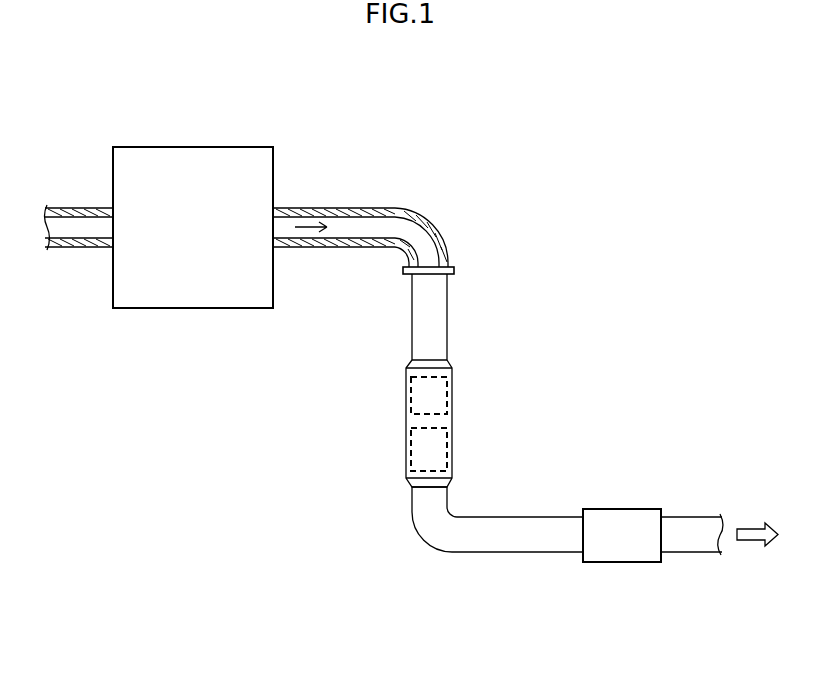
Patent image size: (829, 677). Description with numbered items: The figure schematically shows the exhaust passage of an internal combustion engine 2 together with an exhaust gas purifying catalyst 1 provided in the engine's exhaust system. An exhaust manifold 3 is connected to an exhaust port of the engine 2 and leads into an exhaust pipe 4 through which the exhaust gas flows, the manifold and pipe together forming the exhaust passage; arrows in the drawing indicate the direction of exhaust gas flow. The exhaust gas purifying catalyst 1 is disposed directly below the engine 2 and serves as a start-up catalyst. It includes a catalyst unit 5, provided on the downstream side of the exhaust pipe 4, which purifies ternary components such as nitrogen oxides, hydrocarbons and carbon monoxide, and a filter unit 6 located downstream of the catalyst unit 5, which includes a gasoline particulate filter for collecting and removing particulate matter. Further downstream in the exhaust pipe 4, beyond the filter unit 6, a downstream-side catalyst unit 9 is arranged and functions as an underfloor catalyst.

The exhaust gas purifying catalyst 1 is at (403, 425).
The internal combustion engine 2 is at (254, 140).
The exhaust manifold 3 is at (366, 207).
The exhaust pipe 4 is at (412, 318).
The catalyst unit 5 is at (447, 402).
The filter unit 6 is at (447, 460).
The downstream-side catalyst unit 9 is at (630, 563).